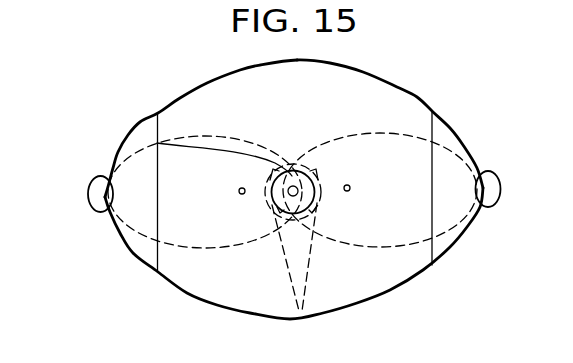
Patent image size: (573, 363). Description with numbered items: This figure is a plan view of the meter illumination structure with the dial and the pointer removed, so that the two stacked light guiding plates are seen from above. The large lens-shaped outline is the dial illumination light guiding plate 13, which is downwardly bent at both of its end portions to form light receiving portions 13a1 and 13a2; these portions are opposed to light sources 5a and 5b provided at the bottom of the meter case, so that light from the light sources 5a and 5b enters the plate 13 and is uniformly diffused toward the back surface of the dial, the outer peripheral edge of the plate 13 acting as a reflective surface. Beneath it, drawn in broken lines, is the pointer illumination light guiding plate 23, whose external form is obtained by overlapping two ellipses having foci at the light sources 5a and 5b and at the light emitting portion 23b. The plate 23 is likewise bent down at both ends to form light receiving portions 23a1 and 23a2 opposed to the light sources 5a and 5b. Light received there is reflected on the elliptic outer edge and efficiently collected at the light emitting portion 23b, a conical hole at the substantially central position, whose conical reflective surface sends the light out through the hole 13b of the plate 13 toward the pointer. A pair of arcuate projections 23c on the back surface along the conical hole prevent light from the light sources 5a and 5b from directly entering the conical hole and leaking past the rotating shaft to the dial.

The dial illumination light guiding plate 13 is at (297, 202).
The light receiving portion 13a1 is at (116, 157).
The light receiving portion 13a2 is at (449, 135).
The hole 13b is at (157, 143).
The pointer illumination light guiding plate 23 is at (298, 241).
The light receiving portion 23a1 is at (135, 232).
The light receiving portion 23a2 is at (447, 213).
The light emitting portion 23b is at (297, 188).
The arcuate projections 23c is at (300, 312).
The light source 5a is at (88, 203).
The light source 5b is at (497, 206).